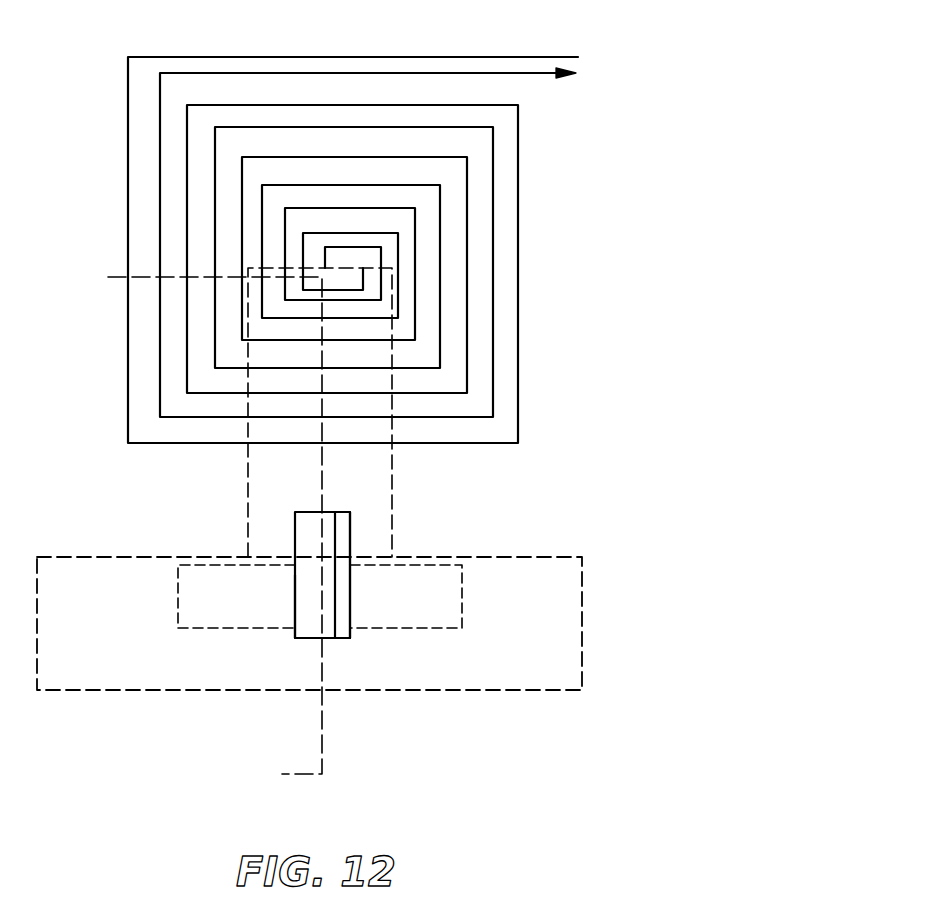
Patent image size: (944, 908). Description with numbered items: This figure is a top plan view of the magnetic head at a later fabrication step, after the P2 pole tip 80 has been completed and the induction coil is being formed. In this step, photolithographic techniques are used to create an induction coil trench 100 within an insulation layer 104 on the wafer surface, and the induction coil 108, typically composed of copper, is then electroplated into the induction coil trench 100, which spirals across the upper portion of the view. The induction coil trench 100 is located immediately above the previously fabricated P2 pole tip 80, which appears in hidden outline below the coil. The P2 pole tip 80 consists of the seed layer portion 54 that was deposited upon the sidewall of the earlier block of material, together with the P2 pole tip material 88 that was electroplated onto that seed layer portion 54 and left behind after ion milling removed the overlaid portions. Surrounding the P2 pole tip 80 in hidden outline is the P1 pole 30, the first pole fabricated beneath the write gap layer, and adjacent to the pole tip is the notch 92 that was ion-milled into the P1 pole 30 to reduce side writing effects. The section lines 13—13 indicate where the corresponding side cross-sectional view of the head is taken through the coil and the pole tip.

The insulation layer 104 is at (718, 323).
The induction coil trench 100 is at (377, 250).
The induction coil 108 is at (381, 242).
The lines 13— 13 is at (186, 527).
The P1 pole 30 is at (82, 553).
The notch 92 is at (322, 449).
The P2 pole tip material 88 is at (300, 550).
The seed layer portion 54 is at (400, 575).
The P2 pole tip 80 is at (299, 631).